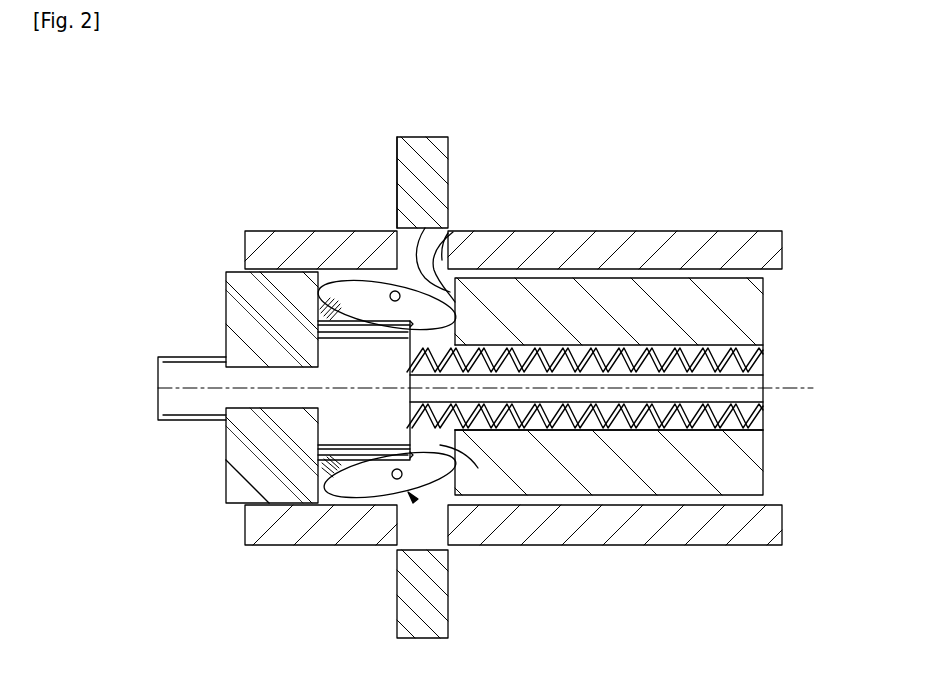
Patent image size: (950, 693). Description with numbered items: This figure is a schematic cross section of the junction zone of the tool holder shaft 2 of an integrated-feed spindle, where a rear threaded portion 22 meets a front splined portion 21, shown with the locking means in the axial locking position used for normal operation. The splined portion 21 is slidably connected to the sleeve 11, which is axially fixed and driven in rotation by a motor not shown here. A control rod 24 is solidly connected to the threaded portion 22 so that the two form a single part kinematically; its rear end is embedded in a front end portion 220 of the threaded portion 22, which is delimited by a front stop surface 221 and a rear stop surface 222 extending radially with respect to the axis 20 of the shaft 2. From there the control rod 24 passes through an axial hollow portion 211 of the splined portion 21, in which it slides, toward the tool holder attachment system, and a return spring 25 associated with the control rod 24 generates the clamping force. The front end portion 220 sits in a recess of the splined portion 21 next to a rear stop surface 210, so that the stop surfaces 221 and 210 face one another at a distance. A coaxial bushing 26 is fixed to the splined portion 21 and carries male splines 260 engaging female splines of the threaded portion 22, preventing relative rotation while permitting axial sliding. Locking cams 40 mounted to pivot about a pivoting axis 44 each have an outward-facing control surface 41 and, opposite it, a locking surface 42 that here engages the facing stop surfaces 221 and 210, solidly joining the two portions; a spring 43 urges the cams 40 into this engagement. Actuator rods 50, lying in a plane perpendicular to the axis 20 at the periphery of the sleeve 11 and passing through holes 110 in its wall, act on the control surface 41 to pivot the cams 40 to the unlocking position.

The tool holder shaft 2 is at (794, 341).
The sleeve 11 is at (683, 243).
The holes 110 is at (397, 212).
The axis 20 is at (800, 387).
The splined portion 21 is at (755, 303).
The rear stop surface 210 is at (445, 234).
The axial hollow portion 211 is at (617, 432).
The threaded portion 22 is at (183, 418).
The front end portion 220 is at (318, 470).
The front stop surface 221 is at (413, 500).
The rear stop surface 222 is at (322, 462).
The control rod 24 is at (753, 393).
The return spring 25 is at (733, 435).
The bushing 26 is at (227, 310).
The male splines 260 is at (227, 372).
The locking cams 40 is at (416, 283).
The control surface 41 is at (357, 288).
The locking surface 42 is at (453, 332).
The spring 43 is at (340, 322).
The pivoting axis 44 is at (338, 296).
The actuator rods 50 is at (407, 137).